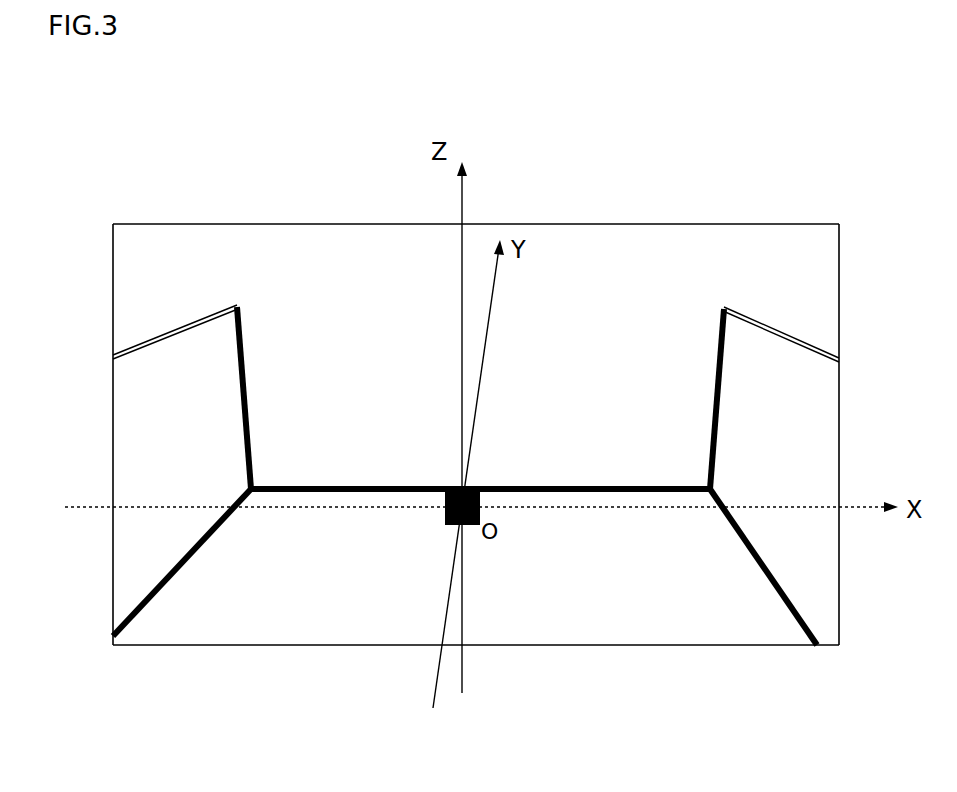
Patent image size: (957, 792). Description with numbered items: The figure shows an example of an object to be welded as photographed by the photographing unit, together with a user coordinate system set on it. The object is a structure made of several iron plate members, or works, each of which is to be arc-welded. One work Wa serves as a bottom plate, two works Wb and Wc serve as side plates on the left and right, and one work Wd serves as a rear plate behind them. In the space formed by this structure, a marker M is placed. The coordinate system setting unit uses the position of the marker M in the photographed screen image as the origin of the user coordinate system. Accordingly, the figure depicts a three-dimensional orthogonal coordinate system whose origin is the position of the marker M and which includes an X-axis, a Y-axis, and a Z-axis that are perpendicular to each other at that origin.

The work serving as a rear plate Wd is at (318, 248).
The work serving as a side plate Wb is at (145, 470).
The work serving as a side plate Wc is at (805, 438).
The work serving as a bottom plate Wa is at (541, 613).
The marker M is at (462, 487).